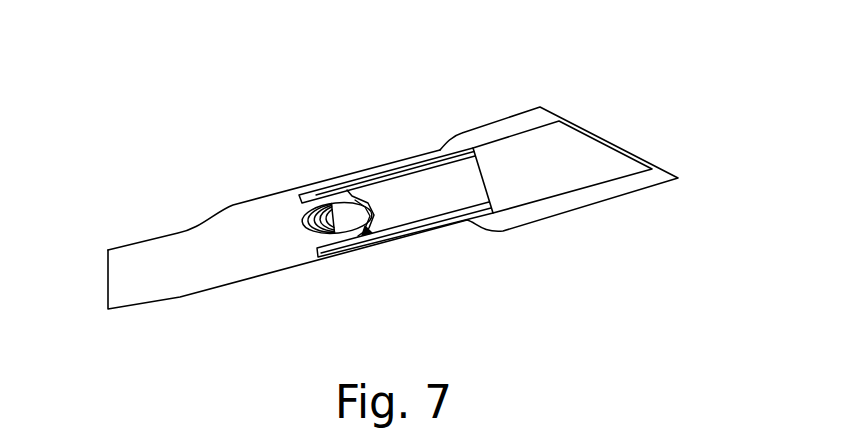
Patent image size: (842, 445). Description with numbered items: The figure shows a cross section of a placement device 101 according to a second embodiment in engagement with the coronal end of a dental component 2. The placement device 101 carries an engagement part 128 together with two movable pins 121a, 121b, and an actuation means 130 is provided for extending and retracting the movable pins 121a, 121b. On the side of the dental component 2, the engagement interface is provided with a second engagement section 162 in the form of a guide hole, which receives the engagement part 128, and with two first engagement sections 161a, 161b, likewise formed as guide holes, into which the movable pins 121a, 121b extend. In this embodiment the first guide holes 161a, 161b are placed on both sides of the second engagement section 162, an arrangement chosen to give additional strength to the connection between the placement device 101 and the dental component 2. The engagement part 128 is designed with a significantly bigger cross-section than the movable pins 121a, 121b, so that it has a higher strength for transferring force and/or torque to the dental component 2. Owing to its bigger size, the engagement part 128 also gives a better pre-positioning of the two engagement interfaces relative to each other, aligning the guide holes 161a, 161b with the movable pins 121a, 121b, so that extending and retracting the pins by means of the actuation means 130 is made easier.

The dental component 2 is at (180, 207).
The placement device 101 is at (541, 87).
The movable pin 121a is at (441, 157).
The movable pin 121b is at (469, 212).
The engagement part 128 is at (354, 212).
The actuation means 130 is at (605, 180).
The first engagement section 161a is at (321, 194).
The first engagement section 161b is at (322, 253).
The second engagement section 162 is at (371, 230).